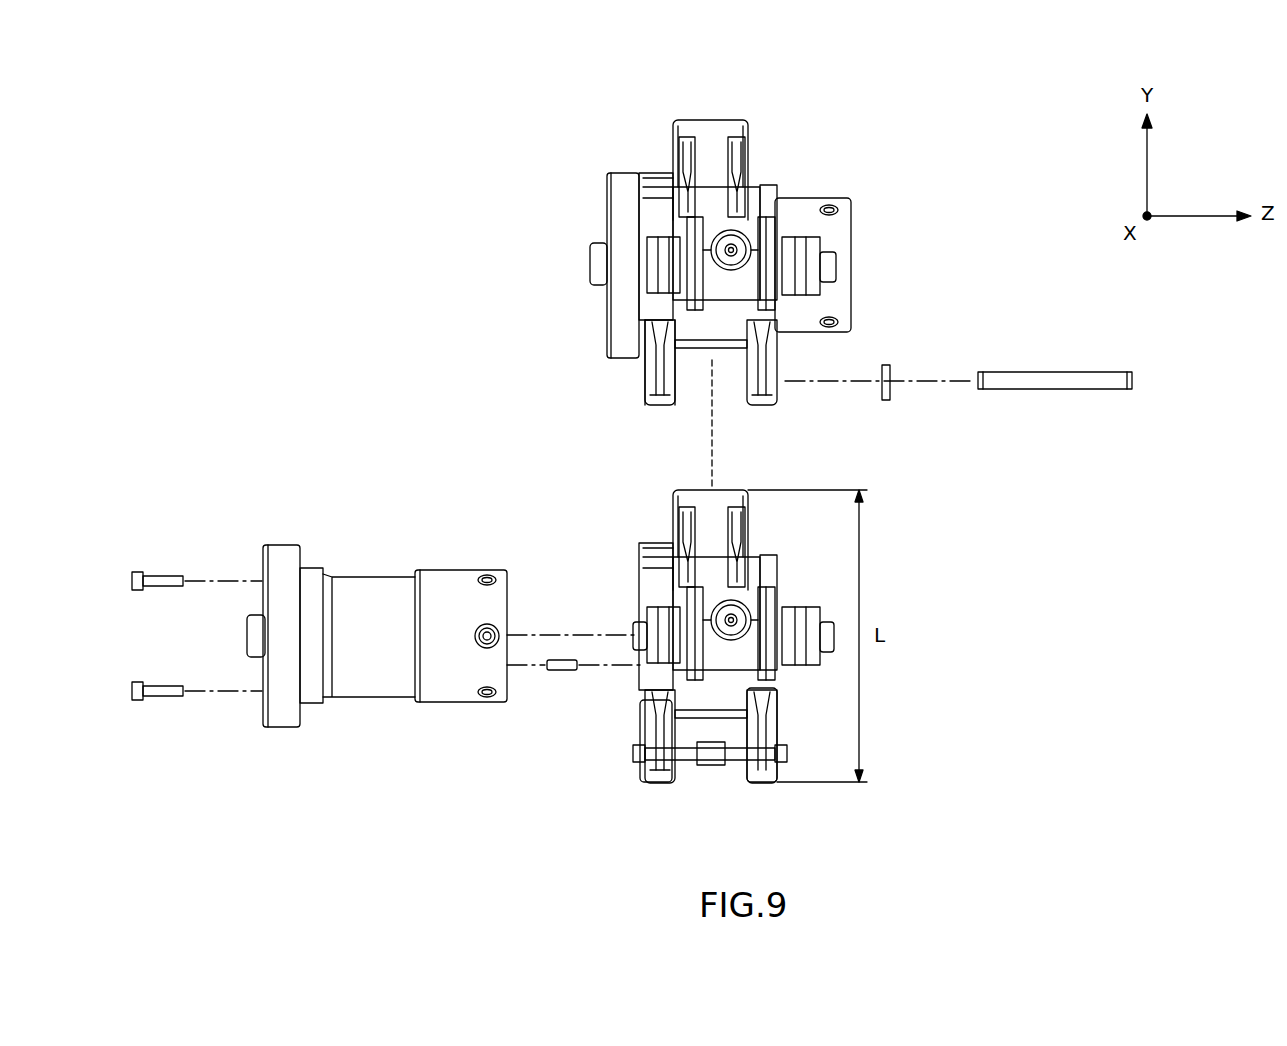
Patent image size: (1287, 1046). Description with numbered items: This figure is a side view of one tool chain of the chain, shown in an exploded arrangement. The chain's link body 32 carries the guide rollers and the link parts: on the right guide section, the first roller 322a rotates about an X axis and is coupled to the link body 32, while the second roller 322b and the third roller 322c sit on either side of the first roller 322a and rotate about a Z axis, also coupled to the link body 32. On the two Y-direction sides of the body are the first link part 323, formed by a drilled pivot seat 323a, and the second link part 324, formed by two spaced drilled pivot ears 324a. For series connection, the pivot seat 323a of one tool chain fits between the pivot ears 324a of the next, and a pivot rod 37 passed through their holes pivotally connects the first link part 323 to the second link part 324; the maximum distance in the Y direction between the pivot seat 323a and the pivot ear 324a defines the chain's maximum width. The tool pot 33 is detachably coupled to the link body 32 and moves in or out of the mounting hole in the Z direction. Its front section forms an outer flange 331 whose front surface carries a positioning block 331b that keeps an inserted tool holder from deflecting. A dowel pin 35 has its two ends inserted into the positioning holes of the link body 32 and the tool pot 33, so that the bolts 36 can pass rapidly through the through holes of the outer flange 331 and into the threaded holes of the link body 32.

The link body 32 is at (718, 700).
The tool pot 33 is at (607, 318).
The dowel pin 35 is at (556, 672).
The bolt 36 is at (166, 580).
The pivot rod 37 is at (1048, 387).
The first link part 323 is at (701, 115).
The pivot seat 323a is at (716, 135).
The first roller 322a is at (743, 232).
The second roller 322b is at (652, 245).
The third roller 322c is at (810, 265).
The second link part 324 is at (635, 392).
The pivot ear 324a is at (660, 408).
The outer flange 331 is at (283, 560).
The positioning block 331b is at (592, 262).